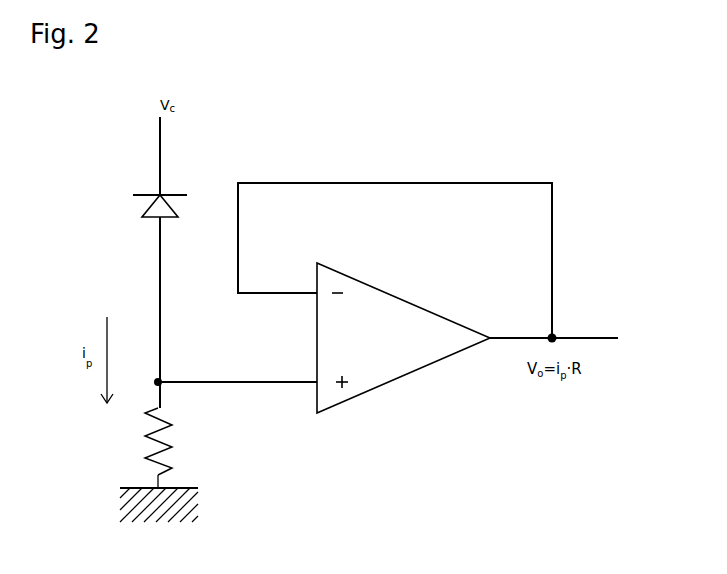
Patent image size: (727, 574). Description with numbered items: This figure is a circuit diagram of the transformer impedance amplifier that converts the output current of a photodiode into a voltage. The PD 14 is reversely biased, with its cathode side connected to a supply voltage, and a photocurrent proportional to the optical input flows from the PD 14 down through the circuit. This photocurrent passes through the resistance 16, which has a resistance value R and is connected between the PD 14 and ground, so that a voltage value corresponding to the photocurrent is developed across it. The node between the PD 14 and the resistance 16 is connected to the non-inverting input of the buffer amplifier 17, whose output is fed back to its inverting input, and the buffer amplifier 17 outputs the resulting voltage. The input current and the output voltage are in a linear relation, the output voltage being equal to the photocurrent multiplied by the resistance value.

The PD 14 is at (143, 214).
The resistance 16 is at (170, 425).
The buffer amplifier 17 is at (390, 372).